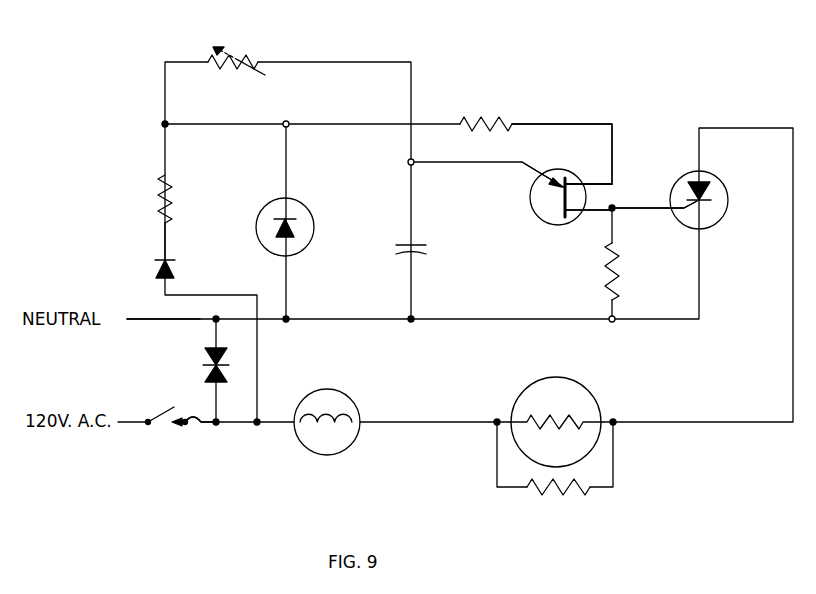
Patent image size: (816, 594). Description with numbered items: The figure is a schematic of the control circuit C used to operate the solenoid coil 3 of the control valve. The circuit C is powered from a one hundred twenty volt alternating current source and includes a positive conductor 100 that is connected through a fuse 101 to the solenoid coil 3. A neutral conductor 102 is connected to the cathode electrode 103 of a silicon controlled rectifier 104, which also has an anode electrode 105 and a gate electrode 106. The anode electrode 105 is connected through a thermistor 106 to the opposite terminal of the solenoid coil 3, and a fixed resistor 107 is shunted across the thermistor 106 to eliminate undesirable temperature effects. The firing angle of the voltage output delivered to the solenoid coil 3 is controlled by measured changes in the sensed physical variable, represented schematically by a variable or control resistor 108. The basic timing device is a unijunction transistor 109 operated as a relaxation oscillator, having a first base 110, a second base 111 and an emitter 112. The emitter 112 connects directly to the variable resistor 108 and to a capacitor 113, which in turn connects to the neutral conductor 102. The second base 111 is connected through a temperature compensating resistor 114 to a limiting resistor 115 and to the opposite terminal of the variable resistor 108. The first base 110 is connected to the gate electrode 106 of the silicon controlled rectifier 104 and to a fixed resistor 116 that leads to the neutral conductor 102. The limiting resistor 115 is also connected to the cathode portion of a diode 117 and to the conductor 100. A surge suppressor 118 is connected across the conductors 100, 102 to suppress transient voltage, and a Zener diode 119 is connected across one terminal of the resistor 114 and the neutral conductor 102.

The solenoid coil 3 is at (353, 441).
The positive conductor 100 is at (148, 426).
The fuse 101 is at (203, 420).
The neutral conductor 102 is at (143, 318).
The cathode electrode 103 is at (707, 206).
The silicon controlled rectifier 104 is at (722, 181).
The anode electrode 105 is at (690, 180).
The gate electrode / thermistor 106 is at (555, 378).
The fixed resistor 107 is at (561, 497).
The variable resistor 108 is at (258, 62).
The unijunction transistor 109 is at (535, 217).
The base-1 110 is at (561, 210).
The base-2 111 is at (568, 178).
The emitter 112 is at (526, 172).
The capacitor 113 is at (420, 256).
The temperature compensating resistor 114 is at (495, 123).
The limiting resistor 115 is at (167, 182).
The fixed resistor 116 is at (615, 284).
The diode 117 is at (178, 276).
The surge suppressor 118 is at (204, 368).
The Zener diode 119 is at (305, 215).
The control circuit C is at (537, 124).